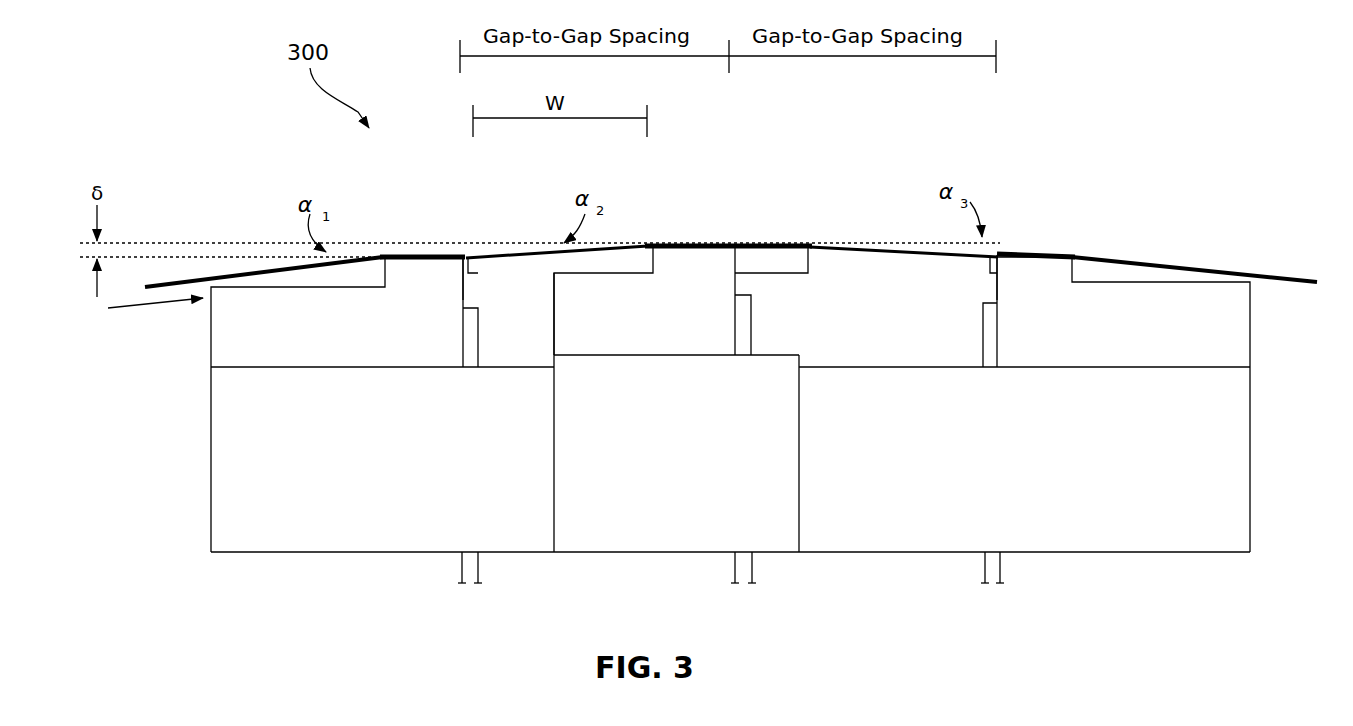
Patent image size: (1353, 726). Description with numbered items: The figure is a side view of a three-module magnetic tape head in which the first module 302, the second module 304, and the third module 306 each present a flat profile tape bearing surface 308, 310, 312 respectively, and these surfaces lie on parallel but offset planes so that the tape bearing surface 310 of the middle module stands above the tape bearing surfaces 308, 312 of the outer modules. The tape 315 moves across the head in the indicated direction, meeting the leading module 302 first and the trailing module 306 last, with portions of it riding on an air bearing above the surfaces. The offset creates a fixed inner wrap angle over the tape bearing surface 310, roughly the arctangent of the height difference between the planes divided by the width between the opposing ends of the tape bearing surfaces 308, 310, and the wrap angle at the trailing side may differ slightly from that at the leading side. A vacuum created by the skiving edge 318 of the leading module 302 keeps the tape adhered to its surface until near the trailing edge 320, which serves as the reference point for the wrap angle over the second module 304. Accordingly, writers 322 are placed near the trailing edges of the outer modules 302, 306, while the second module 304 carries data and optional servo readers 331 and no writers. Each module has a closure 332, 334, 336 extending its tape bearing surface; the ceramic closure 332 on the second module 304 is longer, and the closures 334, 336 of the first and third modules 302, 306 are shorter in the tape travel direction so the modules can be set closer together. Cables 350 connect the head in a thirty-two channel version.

The first module 302 is at (211, 330).
The second module 304 is at (630, 270).
The third module 306 is at (1250, 327).
The tape bearing surface 308 is at (433, 254).
The tape bearing surface 310 is at (682, 242).
The tape bearing surface 312 is at (1029, 245).
The tape 315 is at (1120, 257).
The skiving edge 318 is at (365, 272).
The trailing edge 320 is at (482, 266).
The writers 322 is at (462, 254).
The data and optional servo readers 331 is at (735, 242).
The closure 332 is at (777, 275).
The closure 334 is at (478, 275).
The closure 336 is at (988, 263).
The cables 350 is at (480, 570).